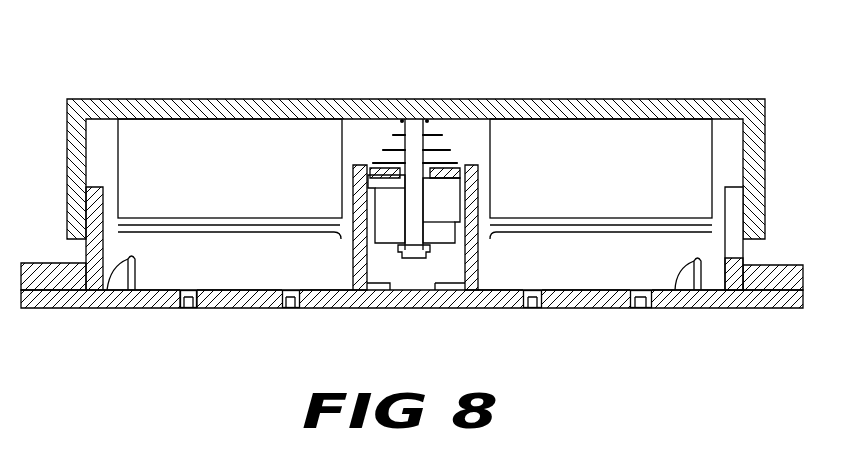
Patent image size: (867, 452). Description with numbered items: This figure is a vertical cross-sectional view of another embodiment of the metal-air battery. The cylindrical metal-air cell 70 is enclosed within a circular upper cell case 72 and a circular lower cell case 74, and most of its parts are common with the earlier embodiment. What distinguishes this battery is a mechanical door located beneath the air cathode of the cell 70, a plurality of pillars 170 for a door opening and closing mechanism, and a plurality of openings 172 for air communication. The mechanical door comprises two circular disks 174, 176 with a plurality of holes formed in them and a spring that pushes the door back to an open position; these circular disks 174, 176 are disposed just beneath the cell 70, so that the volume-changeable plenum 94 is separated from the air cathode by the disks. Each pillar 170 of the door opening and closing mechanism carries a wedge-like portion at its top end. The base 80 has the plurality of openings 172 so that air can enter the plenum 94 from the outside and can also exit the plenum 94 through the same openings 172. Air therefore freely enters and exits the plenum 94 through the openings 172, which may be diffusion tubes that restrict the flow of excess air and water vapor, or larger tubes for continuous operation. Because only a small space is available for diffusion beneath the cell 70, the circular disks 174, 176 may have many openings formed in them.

The upper cell case 72 is at (577, 99).
The lower cell case 74 is at (757, 308).
The metal-air cell 70 is at (246, 178).
The base 80 is at (402, 309).
The plenum 94 is at (222, 276).
The pillar 170 is at (108, 309).
The opening 172 is at (292, 309).
The circular disk 174 is at (341, 241).
The circular disk 176 is at (290, 237).